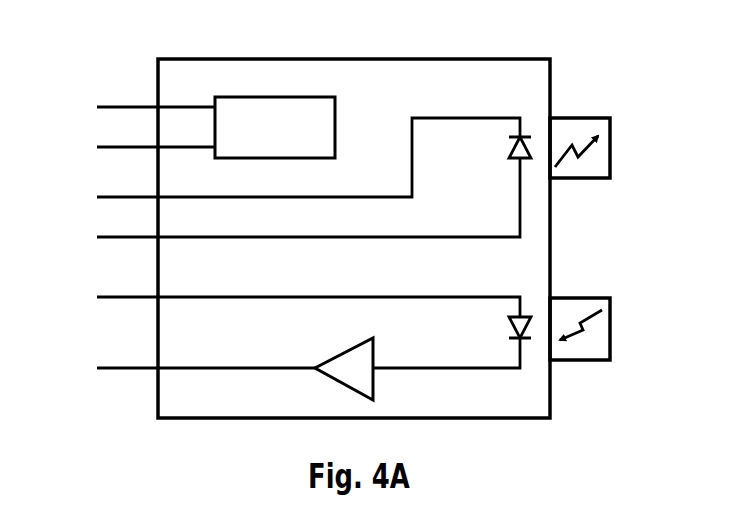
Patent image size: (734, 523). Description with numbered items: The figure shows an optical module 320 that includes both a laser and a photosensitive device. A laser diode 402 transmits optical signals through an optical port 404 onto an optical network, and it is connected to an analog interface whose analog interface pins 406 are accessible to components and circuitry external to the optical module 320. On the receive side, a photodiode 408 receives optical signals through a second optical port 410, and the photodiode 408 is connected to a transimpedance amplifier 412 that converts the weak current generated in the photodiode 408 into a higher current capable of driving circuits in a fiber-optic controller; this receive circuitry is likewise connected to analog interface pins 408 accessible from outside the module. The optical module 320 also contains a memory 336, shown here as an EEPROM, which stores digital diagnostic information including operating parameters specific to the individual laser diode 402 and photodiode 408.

The optical module 320 is at (353, 57).
The memory 336 is at (338, 128).
The laser diode 402 is at (525, 135).
The optical port 404 is at (612, 147).
The analog interface pins 406 is at (298, 177).
The photodiode 408 is at (575, 388).
The optical port 410 is at (612, 325).
The transimpedance amplifier 412 is at (340, 352).